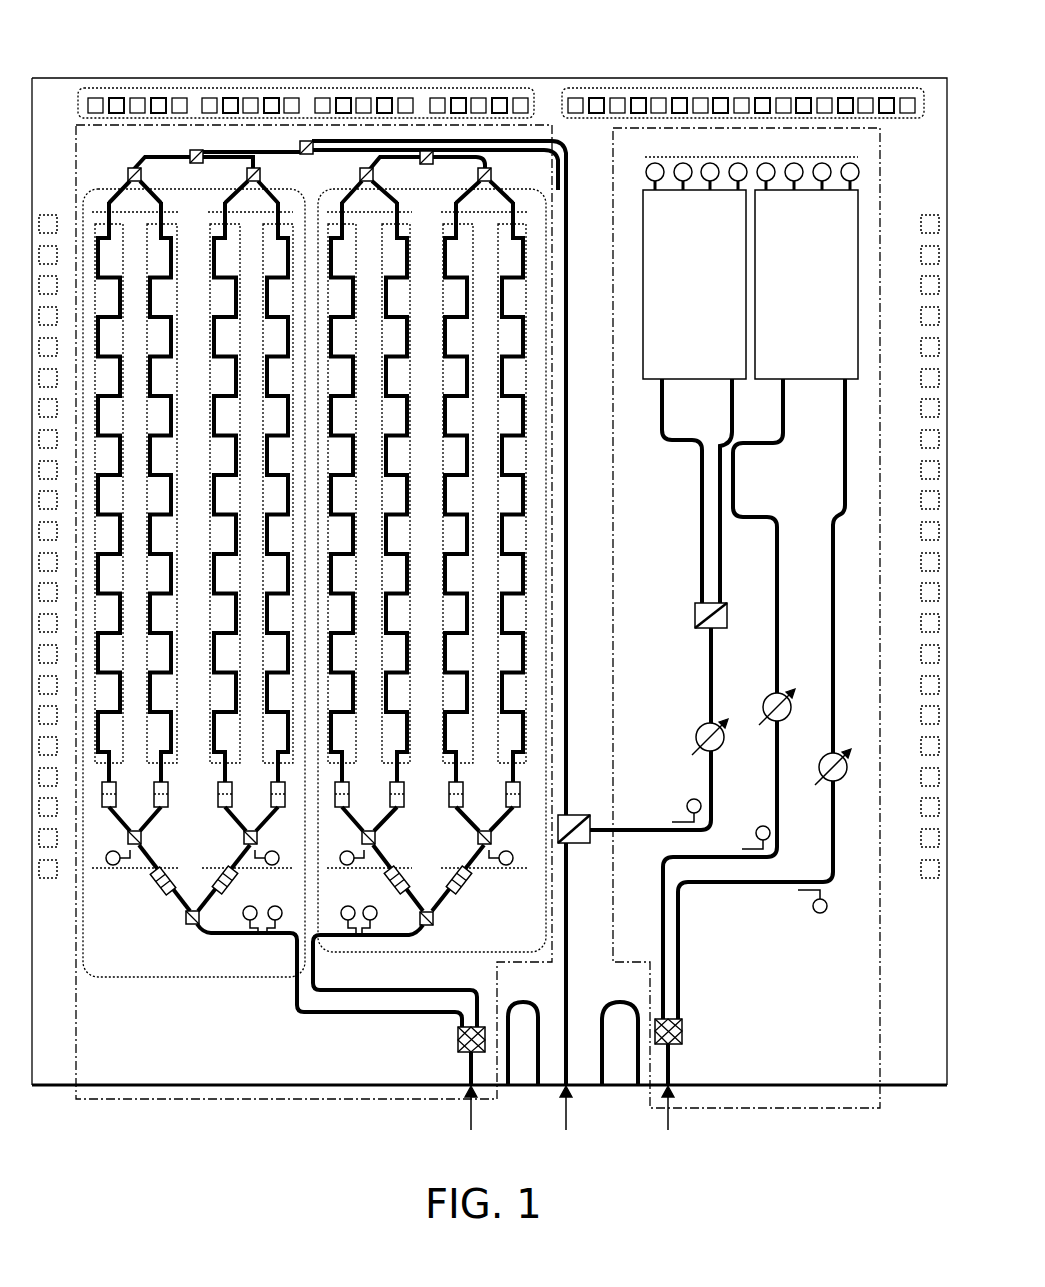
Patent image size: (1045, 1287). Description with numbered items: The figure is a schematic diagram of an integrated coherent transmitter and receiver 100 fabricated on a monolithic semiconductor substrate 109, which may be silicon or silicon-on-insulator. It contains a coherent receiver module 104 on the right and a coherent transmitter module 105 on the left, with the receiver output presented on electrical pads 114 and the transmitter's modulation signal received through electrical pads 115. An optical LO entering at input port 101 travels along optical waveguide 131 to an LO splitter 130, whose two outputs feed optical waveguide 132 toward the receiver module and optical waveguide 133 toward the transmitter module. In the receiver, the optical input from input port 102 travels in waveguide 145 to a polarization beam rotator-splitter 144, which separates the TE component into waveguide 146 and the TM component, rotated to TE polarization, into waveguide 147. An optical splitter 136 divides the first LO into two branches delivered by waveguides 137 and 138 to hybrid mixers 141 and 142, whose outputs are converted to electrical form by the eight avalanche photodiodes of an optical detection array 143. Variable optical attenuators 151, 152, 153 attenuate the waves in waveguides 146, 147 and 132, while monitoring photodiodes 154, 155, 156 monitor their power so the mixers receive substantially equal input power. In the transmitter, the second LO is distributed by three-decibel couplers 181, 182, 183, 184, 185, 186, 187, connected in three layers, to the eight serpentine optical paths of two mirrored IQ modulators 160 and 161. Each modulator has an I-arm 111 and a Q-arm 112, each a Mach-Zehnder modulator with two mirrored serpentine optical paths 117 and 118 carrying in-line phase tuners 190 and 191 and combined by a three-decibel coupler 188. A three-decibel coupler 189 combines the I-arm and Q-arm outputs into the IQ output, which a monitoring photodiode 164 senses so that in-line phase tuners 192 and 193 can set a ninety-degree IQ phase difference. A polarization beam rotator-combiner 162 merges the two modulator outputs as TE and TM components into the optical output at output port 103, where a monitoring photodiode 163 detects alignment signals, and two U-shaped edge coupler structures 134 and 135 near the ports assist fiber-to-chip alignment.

The integrated coherent transmitter and receiver (ICTR) 100 is at (136, 50).
The input port 101 is at (566, 1130).
The input port 102 is at (668, 1130).
The output port 103 is at (471, 1130).
The coherent receiver module (CRM) 104 is at (810, 1108).
The coherent transmitter module (CTM) 105 is at (305, 1099).
The monolithic semiconductor substrate 109 is at (47, 100).
The I-arm 111 is at (252, 542).
The Q-arm 112 is at (365, 542).
The electrical pads 114 is at (748, 88).
The electrical pads 115 is at (308, 88).
The serpentine optical path 117 is at (108, 430).
The serpentine optical path 118 is at (152, 460).
The LO splitter 130 is at (573, 813).
The optical waveguide 131 is at (569, 912).
The optical waveguide 132 is at (714, 662).
The optical waveguide 133 is at (569, 694).
The U-shaped edge coupler structure 134 is at (520, 1002).
The U-shaped edge coupler structure 135 is at (616, 1002).
The optical splitter 136 is at (727, 614).
The waveguide 137 is at (718, 583).
The waveguide 138 is at (702, 582).
The hybrid mixer 141 is at (821, 328).
The hybrid mixer 142 is at (709, 328).
The optical detection array (ODA) 143 is at (752, 162).
The polarization beam rotator-splitter (PBRS) 144 is at (683, 1033).
The waveguide 145 is at (670, 1058).
The waveguide 146 is at (836, 614).
The waveguide 147 is at (780, 614).
The variable optical attenuator (VOA) 151 is at (822, 758).
The variable optical attenuator (VOA) 152 is at (766, 698).
The variable optical attenuator (VOA) 153 is at (697, 730).
The monitoring photodiode (MPD) 154 is at (826, 910).
The monitoring photodiode (MPD) 155 is at (757, 827).
The monitoring photodiode (MPD) 156 is at (688, 801).
The IQ modulator 160 is at (247, 977).
The IQ modulator 161 is at (412, 952).
The polarization beam rotator-combiner (PBRC) 162 is at (457, 1040).
The monitoring photodiode (MPD) 163 is at (246, 920).
The monitoring photodiode (MPD) 164 is at (272, 921).
The 3 dB coupler 181 is at (300, 143).
The 3 dB coupler 182 is at (421, 160).
The 3 dB coupler 183 is at (492, 171).
The 3 dB coupler 184 is at (360, 171).
The 3 dB coupler 185 is at (260, 172).
The 3 dB coupler 186 is at (190, 152).
The 3 dB coupler 187 is at (128, 170).
The 3 dB coupler 188 is at (141, 840).
The 3 dB coupler 189 is at (188, 924).
The in-line phase tuner 190 is at (116, 792).
The in-line phase tuner 191 is at (168, 792).
The in-line phase tuner 192 is at (152, 890).
The in-line phase tuner 193 is at (218, 890).